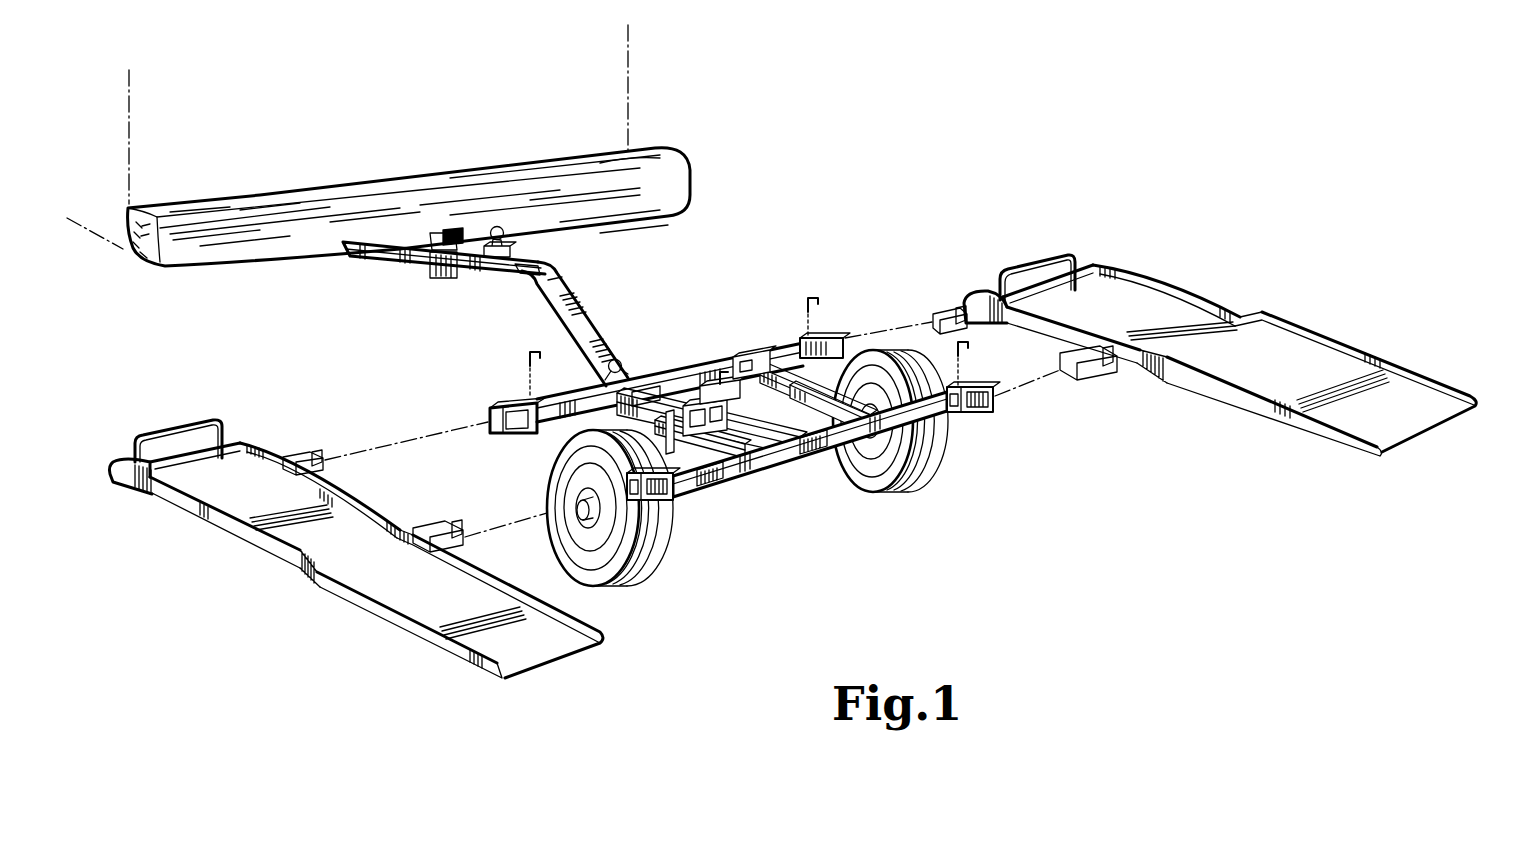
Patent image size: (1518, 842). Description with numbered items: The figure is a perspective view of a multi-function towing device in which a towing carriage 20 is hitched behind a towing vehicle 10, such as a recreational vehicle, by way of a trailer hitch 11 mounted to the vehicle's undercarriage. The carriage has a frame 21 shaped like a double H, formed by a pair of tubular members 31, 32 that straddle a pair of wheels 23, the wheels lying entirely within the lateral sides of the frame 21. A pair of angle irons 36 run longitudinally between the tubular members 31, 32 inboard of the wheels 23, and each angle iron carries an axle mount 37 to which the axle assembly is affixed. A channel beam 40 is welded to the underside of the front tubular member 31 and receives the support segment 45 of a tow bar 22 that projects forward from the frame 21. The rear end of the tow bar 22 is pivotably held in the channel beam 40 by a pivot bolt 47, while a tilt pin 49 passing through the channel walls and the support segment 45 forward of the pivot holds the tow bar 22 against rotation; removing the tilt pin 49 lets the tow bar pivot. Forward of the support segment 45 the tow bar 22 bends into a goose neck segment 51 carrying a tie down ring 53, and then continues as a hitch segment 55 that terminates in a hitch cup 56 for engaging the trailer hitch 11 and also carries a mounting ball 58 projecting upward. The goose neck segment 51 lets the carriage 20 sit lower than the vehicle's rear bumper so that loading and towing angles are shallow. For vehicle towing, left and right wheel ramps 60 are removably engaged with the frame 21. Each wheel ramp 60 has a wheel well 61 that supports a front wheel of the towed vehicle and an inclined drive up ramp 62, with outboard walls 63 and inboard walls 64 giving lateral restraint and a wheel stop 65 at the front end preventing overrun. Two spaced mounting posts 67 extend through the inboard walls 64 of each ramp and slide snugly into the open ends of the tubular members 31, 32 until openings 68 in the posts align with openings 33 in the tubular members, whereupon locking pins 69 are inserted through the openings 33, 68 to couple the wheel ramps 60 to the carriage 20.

The towing vehicle 10 is at (682, 172).
The trailer hitch 11 is at (406, 260).
The hitch cup 56 is at (452, 230).
The mounting ball 58 is at (504, 233).
The hitch segment 55 is at (536, 268).
The tow bar 22 is at (587, 322).
The goose neck segment 51 is at (580, 300).
The tie down ring 53 is at (620, 360).
The tilt pin 49 is at (637, 392).
The channel beam 40 is at (688, 386).
The pivot bolt 47 is at (716, 386).
The support segment 45 is at (727, 416).
The towing carriage 20 is at (719, 400).
The tubular member 31 is at (492, 412).
The tubular member 32 is at (770, 462).
The openings 33 is at (803, 340).
The angle irons 36 is at (730, 462).
The axle mount 37 is at (612, 396).
The locking pins 69 is at (541, 357).
The wheels 23 is at (641, 576).
The frame 21 is at (958, 416).
The wheel ramps 60 is at (792, 447).
The wheel well 61 is at (236, 503).
The inclined drive up ramp 62 is at (436, 608).
The outboard walls 63 is at (272, 548).
The inboard walls 64 is at (358, 507).
The wheel stop 65 is at (222, 426).
The mounting posts 67 is at (318, 451).
The openings 68 is at (295, 456).